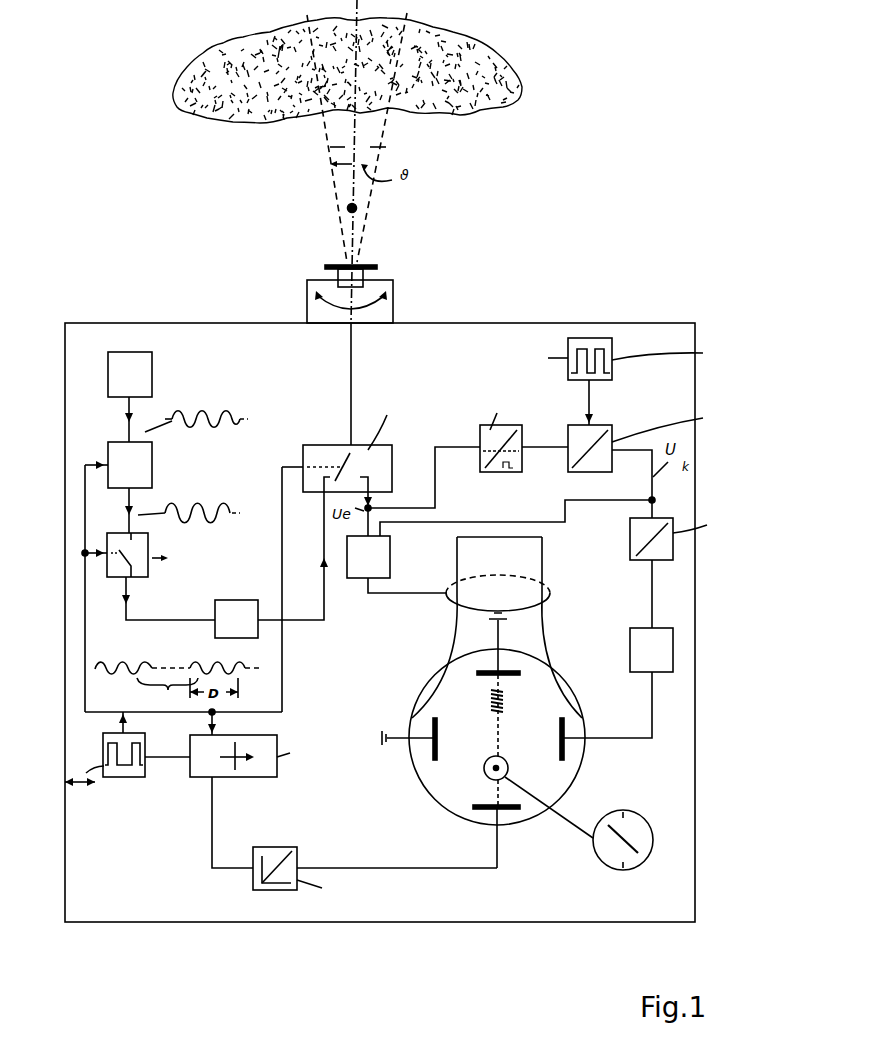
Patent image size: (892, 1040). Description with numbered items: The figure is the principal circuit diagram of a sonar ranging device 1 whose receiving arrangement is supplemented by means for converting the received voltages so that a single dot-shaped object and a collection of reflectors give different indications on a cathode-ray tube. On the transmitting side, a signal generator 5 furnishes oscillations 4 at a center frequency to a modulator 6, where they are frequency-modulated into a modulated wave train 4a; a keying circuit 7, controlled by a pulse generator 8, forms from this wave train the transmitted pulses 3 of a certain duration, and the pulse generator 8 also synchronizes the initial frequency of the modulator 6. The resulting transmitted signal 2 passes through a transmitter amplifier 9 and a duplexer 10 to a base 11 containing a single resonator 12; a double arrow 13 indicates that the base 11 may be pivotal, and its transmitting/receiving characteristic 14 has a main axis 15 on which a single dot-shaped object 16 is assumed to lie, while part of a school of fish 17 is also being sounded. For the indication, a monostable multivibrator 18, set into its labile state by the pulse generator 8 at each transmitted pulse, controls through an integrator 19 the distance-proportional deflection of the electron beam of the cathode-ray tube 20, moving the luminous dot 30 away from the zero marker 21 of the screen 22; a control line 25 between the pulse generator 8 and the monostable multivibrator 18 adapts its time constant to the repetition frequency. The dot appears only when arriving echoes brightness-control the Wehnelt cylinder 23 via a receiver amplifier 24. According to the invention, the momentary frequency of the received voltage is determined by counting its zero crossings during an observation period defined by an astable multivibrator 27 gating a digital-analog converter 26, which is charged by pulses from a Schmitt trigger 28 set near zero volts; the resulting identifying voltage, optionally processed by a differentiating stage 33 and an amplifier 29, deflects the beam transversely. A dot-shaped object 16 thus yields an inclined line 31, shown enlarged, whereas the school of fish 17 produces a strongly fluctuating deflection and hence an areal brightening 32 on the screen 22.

The ranging device 1 is at (583, 323).
The transmitted signal 2 is at (167, 695).
The transmitted pulses 3 is at (117, 660).
The oscillations 4 is at (222, 432).
The modulated wave train 4a is at (228, 503).
The signal generator 5 is at (155, 363).
The modulator 6 is at (155, 465).
The keying circuit 7 is at (152, 552).
The pulse generator 8 is at (123, 782).
The transmitter amplifier 9 is at (228, 597).
The duplexer 10 is at (322, 445).
The base 11 is at (387, 305).
The resonator 12 is at (373, 263).
The double arrow 13 is at (325, 302).
The transmitting/receiving characteristic 14 is at (388, 147).
The main axis 15 is at (349, 147).
The dot-shaped object 16 is at (358, 207).
The school of fish 17 is at (490, 68).
The monostable multivibrator 18 is at (207, 773).
The integrator 19 is at (290, 843).
The cathode-ray tube 20 is at (538, 647).
The zero marker 21 is at (488, 796).
The screen 22 is at (567, 777).
The Wehnelt cylinder 23 is at (548, 583).
The receiver amplifier 24 is at (393, 564).
The control line 25 is at (162, 762).
The digital-analog converter 26 is at (615, 433).
The astable multivibrator 27 is at (613, 348).
The Schmitt trigger 28 is at (525, 430).
The amplifier 29 is at (665, 622).
The luminous dot 30 is at (485, 773).
The inclined line 31 is at (618, 842).
The areal brightening 32 is at (517, 703).
The differentiating stage 33 is at (665, 513).